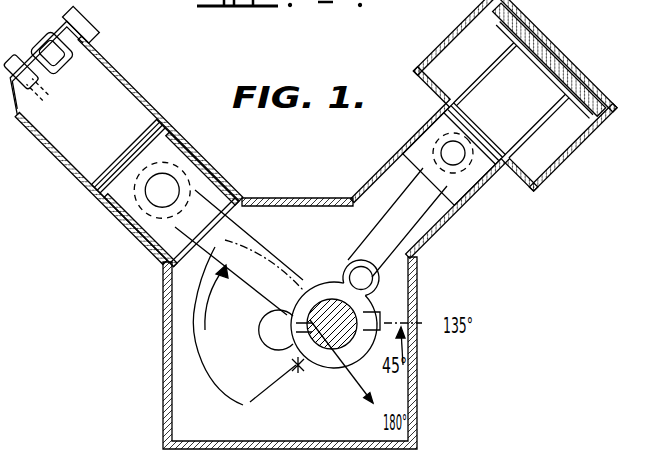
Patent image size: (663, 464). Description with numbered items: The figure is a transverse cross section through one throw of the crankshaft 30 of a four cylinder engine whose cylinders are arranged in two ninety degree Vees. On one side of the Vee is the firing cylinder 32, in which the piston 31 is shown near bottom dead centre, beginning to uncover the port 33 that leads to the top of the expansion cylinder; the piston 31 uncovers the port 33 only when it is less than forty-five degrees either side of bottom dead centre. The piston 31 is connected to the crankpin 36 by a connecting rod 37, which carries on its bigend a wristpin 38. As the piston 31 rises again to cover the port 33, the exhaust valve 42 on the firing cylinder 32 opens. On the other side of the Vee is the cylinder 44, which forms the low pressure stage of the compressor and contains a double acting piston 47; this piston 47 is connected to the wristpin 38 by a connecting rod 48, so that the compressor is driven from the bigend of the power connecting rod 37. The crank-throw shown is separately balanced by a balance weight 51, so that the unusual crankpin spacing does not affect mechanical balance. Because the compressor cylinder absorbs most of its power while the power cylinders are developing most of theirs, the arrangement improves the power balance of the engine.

The crankshaft 30 is at (300, 367).
The piston 31 is at (138, 230).
The firing cylinder 32 is at (75, 173).
The port 33 is at (133, 107).
The crankpin 36 is at (337, 307).
The connecting rod 37 is at (243, 253).
The wristpin 38 is at (363, 270).
The exhaust valve 42 is at (43, 58).
The cylinder 44 is at (570, 162).
The double acting piston 47 is at (527, 53).
The connecting rod 48 is at (410, 215).
The balance weight 51 is at (247, 385).